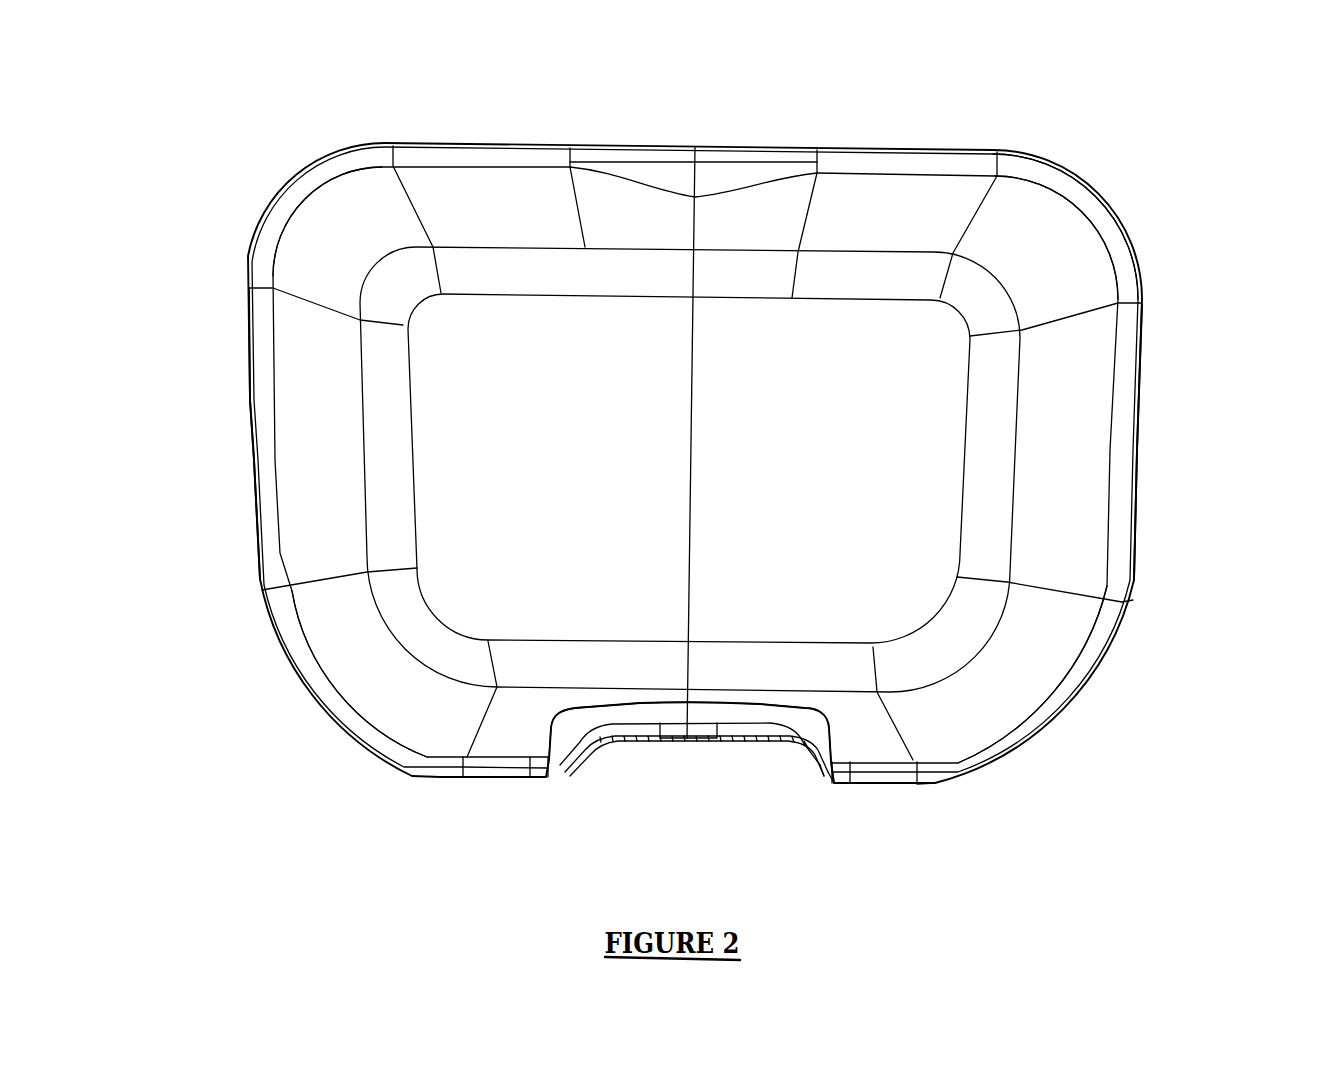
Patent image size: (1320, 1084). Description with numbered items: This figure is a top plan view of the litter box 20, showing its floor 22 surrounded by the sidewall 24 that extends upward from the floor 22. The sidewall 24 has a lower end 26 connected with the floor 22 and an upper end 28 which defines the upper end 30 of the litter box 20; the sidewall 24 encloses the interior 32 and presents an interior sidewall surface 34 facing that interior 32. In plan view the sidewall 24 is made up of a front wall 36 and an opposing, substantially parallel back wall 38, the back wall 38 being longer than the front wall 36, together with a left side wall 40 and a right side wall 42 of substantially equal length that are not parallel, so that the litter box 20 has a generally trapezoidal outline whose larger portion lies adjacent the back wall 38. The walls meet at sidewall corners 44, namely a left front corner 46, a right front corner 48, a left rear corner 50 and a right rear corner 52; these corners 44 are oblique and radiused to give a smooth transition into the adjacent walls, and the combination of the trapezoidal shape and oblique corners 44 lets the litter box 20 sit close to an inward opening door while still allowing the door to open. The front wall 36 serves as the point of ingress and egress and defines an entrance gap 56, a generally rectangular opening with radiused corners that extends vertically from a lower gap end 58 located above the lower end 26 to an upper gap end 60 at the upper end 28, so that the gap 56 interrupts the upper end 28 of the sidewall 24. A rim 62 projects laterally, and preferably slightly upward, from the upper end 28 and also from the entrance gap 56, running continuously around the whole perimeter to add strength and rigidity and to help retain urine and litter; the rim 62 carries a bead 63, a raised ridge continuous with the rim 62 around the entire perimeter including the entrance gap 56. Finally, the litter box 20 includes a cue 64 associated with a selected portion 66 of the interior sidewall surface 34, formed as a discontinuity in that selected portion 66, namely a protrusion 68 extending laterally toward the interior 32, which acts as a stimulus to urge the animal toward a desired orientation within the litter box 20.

The litter box 20 is at (1144, 176).
The floor 22 is at (933, 488).
The sidewall 24 is at (248, 477).
The lower end 26 is at (953, 550).
The upper end 28 is at (1120, 572).
The upper end 30 is at (250, 400).
The interior 32 is at (465, 554).
The interior sidewall surface 34 is at (383, 680).
The front wall 36 is at (490, 733).
The back wall 38 is at (930, 205).
The left side wall 40 is at (282, 357).
The right side wall 42 is at (1093, 375).
The sidewall corners 44 is at (1108, 226).
The left front corner 46 is at (347, 680).
The right front corner 48 is at (1020, 705).
The left rear corner 50 is at (307, 203).
The right rear corner 52 is at (1073, 232).
The entrance gap 56 is at (689, 802).
The lower gap end 58 is at (718, 745).
The upper gap end 60 is at (825, 780).
The rim 62 is at (605, 733).
The bead 63 is at (640, 735).
The cue 64 is at (713, 156).
The selected portion 66 is at (727, 230).
The protrusion 68 is at (683, 190).